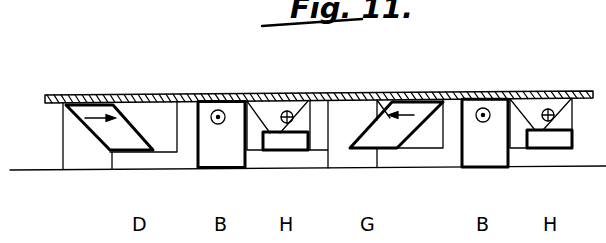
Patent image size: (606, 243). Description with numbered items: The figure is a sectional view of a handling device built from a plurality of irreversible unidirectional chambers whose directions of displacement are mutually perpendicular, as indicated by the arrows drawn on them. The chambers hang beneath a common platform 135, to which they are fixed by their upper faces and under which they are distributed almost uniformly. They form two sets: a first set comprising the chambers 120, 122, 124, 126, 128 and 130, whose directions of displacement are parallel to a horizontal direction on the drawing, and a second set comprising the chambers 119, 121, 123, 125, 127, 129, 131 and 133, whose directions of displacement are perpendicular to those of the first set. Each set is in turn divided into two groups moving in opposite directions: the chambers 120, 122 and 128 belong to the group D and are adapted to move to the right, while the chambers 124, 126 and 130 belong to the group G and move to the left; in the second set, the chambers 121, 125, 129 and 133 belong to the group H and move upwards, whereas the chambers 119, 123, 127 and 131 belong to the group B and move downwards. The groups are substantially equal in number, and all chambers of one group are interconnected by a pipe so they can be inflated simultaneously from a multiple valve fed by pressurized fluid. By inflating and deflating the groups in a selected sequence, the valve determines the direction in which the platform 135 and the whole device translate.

The irreversible unidirectional chamber 119 is at (68, 133).
The irreversible unidirectional chamber 120 is at (132, 142).
The irreversible unidirectional chamber 121 is at (152, 110).
The irreversible unidirectional chamber 122 is at (248, 117).
The irreversible unidirectional chamber 123 is at (218, 158).
The irreversible unidirectional chamber 124 is at (273, 108).
The irreversible unidirectional chamber 125 is at (288, 143).
The irreversible unidirectional chamber 126 is at (370, 135).
The irreversible unidirectional chamber 127 is at (343, 112).
The irreversible unidirectional chamber 128 is at (515, 118).
The irreversible unidirectional chamber 129 is at (436, 125).
The irreversible unidirectional chamber 130 is at (543, 102).
The irreversible unidirectional chamber 131 is at (483, 155).
The irreversible unidirectional chamber 133 is at (553, 140).
The common platform 135 is at (50, 95).